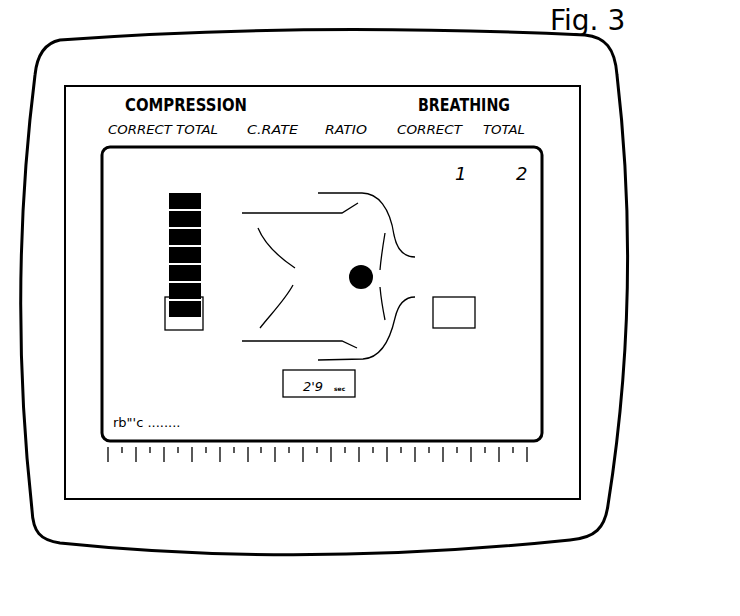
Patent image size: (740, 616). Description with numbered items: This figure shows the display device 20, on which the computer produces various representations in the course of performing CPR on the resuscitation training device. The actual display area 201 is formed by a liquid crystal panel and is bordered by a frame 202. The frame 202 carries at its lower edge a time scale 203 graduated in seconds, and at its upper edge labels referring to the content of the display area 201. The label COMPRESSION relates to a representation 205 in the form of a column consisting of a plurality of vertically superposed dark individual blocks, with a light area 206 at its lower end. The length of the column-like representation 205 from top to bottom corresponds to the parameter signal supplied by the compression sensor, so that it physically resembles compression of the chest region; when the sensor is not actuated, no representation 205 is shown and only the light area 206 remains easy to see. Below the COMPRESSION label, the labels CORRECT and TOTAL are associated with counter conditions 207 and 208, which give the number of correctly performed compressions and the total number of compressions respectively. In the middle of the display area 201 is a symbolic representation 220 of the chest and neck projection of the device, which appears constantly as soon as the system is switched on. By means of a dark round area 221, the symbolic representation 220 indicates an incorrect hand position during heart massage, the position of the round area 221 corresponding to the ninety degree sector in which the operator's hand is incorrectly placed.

The display device 20 is at (143, 555).
The display area 201 is at (540, 410).
The frame 202 is at (570, 465).
The time scale 203 is at (364, 447).
The representation 205 is at (169, 252).
The light area 206 is at (166, 316).
The counter condition 207 is at (149, 181).
The counter condition 208 is at (224, 171).
The symbolic representation 220 is at (263, 341).
The dark round area 221 is at (362, 290).